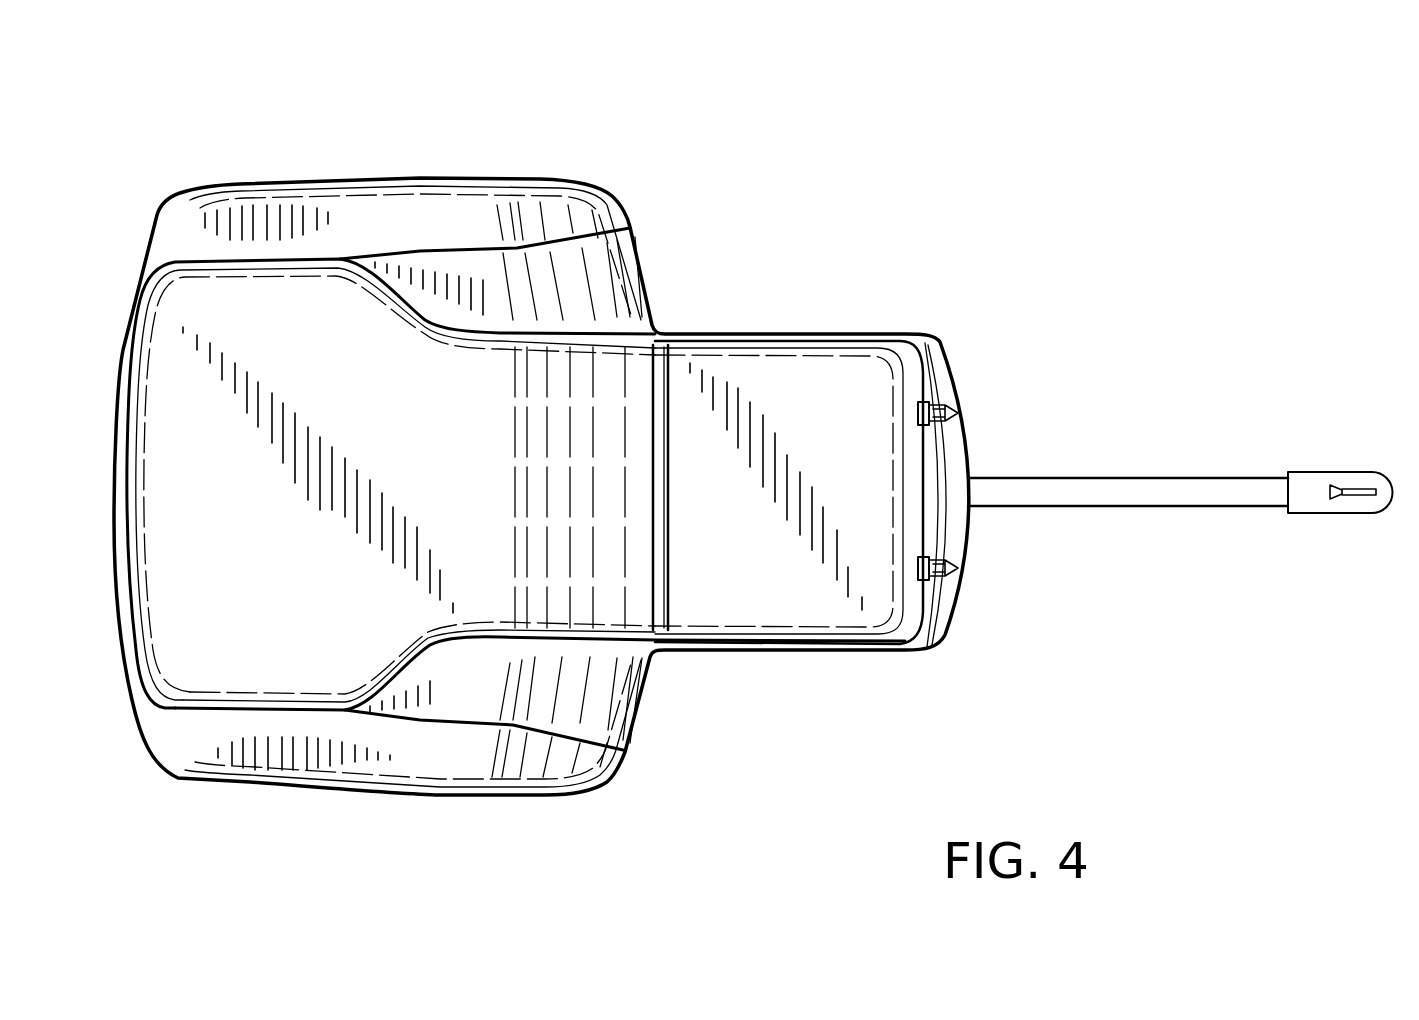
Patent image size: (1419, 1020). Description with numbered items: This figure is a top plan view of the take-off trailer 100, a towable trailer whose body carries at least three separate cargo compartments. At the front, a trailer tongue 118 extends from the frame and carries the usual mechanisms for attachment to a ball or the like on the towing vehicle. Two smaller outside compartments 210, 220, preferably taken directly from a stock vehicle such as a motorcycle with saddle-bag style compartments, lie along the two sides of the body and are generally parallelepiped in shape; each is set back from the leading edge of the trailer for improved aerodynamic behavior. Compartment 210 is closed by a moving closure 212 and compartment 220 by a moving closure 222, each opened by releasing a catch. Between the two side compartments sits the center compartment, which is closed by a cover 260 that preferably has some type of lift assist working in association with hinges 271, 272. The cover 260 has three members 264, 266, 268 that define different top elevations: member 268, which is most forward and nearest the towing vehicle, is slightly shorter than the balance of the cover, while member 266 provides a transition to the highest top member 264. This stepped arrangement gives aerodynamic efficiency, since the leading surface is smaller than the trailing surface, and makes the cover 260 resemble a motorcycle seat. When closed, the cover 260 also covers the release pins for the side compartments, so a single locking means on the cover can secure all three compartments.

The take-off trailer 100 is at (1087, 92).
The trailer tongue 118 is at (1316, 482).
The outside compartment 210 is at (603, 698).
The moving closure 212 is at (395, 770).
The outside compartment 220 is at (602, 279).
The moving closure 222 is at (447, 202).
The cover 260 is at (778, 350).
The highest top member 264 is at (284, 319).
The member 266 is at (600, 389).
The member 268 is at (843, 367).
The hinge 271 is at (955, 568).
The hinge 272 is at (958, 413).